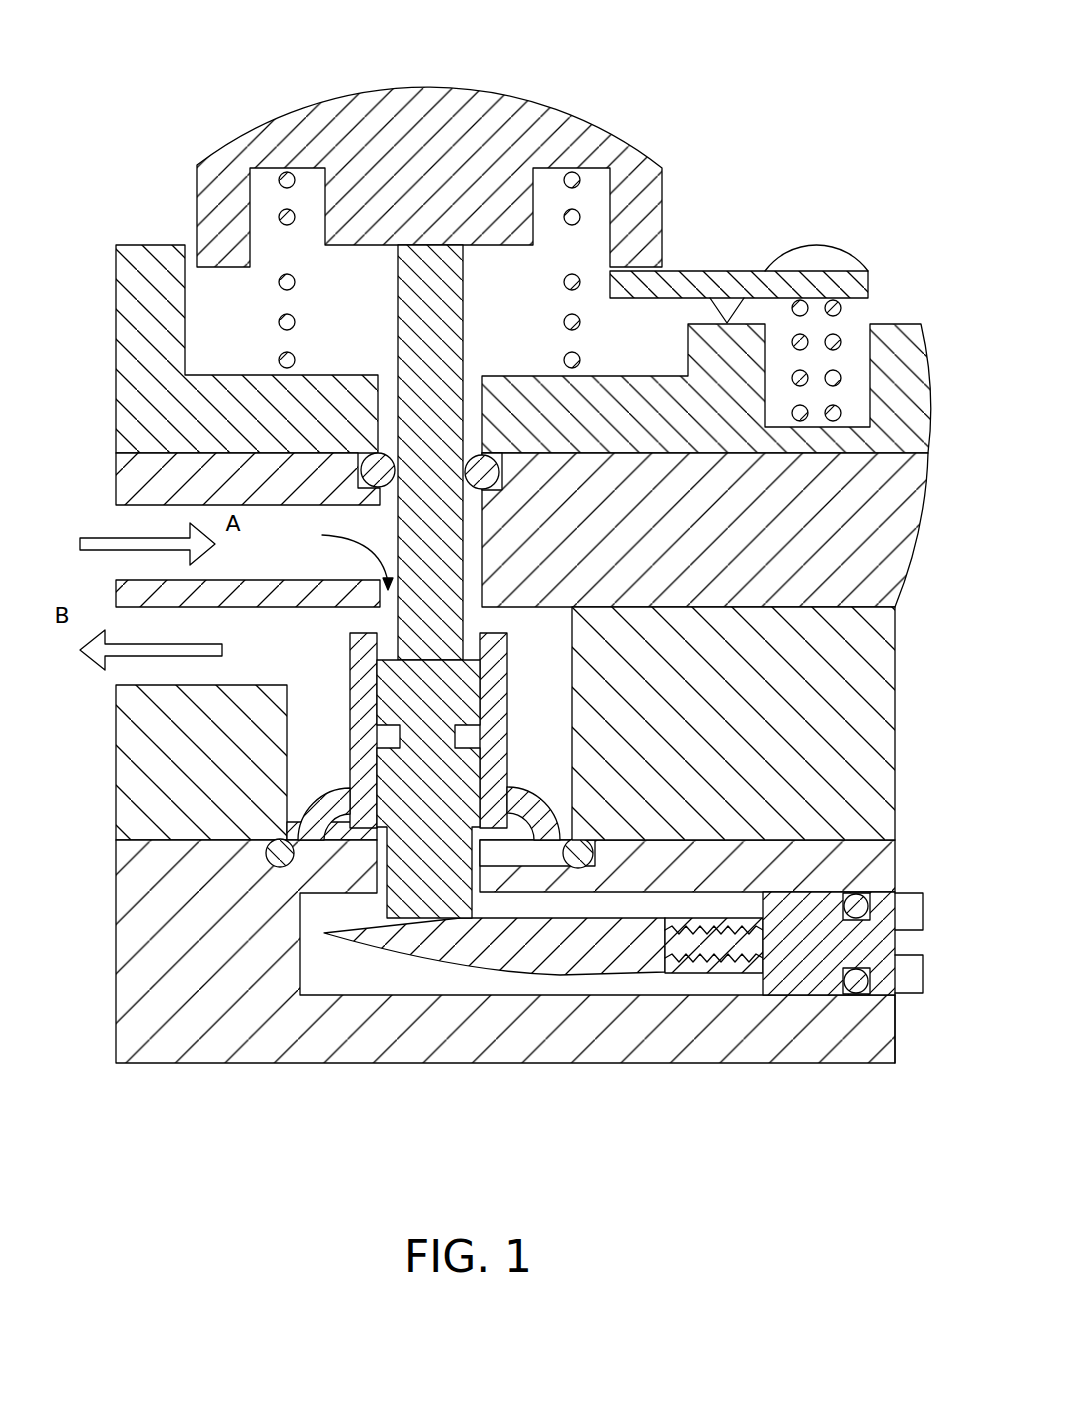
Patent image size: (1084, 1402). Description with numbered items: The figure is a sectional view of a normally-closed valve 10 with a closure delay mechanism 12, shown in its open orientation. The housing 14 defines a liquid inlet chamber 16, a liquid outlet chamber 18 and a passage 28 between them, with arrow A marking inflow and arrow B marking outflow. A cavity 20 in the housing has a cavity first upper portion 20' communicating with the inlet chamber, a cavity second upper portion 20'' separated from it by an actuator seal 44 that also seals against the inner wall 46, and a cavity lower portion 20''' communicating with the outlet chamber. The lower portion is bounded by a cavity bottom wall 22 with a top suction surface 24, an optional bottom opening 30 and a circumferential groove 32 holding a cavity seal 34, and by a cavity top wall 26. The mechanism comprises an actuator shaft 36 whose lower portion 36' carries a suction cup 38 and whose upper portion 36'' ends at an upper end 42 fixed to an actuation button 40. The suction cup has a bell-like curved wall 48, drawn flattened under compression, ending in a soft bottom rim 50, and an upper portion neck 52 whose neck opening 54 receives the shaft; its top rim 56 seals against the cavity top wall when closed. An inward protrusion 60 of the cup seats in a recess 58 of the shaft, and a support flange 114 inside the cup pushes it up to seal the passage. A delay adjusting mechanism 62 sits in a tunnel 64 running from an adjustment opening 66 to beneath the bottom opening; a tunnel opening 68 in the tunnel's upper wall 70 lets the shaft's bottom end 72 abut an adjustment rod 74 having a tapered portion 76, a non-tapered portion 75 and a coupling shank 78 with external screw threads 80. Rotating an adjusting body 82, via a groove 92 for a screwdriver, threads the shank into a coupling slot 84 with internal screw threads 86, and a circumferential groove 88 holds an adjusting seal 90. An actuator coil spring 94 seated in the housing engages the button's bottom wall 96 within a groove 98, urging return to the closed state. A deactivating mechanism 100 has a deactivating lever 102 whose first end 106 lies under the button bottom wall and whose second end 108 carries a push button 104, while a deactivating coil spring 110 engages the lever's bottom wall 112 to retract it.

The normally-closed valve 10 is at (514, 60).
The closure delay mechanism 12 is at (330, 705).
The housing 14 is at (897, 752).
The liquid inlet chamber 16 is at (140, 520).
The liquid outlet chamber 18 is at (145, 675).
The cavity 20 is at (175, 778).
The cavity first upper portion 20' is at (716, 530).
The cavity second upper portion 20'' is at (506, 360).
The cavity lower portion 20''' is at (751, 703).
The cavity bottom wall 22 is at (548, 852).
The top suction surface 24 is at (300, 920).
The cavity top wall 26 is at (320, 612).
The passage 28 is at (388, 598).
The bottom opening 30 is at (305, 950).
The circumferential groove 32 is at (572, 870).
The cavity seal 34 is at (268, 862).
The actuator shaft 36 is at (713, 390).
The actuator shaft lower portion 36' is at (467, 789).
The actuator shaft upper portion 36'' is at (466, 452).
The suction cup 38 is at (508, 733).
The actuation button 40 is at (430, 86).
The upper end 42 is at (433, 250).
The actuator seal 44 is at (380, 487).
The inner wall 46 is at (482, 468).
The curved wall 48 is at (523, 790).
The bottom rim 50 is at (300, 890).
The upper portion neck 52 is at (480, 662).
The neck opening 54 is at (523, 607).
The top rim 56 is at (500, 607).
The recess 58 is at (468, 745).
The inward protrusion 60 is at (458, 730).
The delay adjusting mechanism 62 is at (467, 1013).
The tunnel 64 is at (547, 975).
The adjustment opening 66 is at (895, 1000).
The tunnel opening 68 is at (320, 990).
The upper wall 70 is at (604, 892).
The bottom end 72 is at (433, 920).
The adjustment rod 74 is at (558, 955).
The non-tapered portion 75 is at (497, 960).
The tapered portion 76 is at (343, 940).
The coupling shank 78 is at (712, 963).
The external screw threads 80 is at (707, 940).
The adjusting body 82 is at (810, 960).
The coupling slot 84 is at (671, 968).
The internal screw threads 86 is at (745, 925).
The circumferential groove 88 is at (858, 920).
The adjusting seal 90 is at (860, 895).
The groove 92 is at (897, 945).
The actuator coil spring 94 is at (603, 185).
The bottom wall 96 is at (212, 265).
The groove 98 is at (287, 172).
The deactivating mechanism 100 is at (756, 212).
The deactivating lever 102 is at (682, 270).
The push button 104 is at (828, 252).
The first end 106 is at (612, 285).
The second end 108 is at (868, 296).
The deactivating coil spring 110 is at (833, 340).
The bottom wall 112 is at (805, 300).
The support flange 114 is at (330, 822).